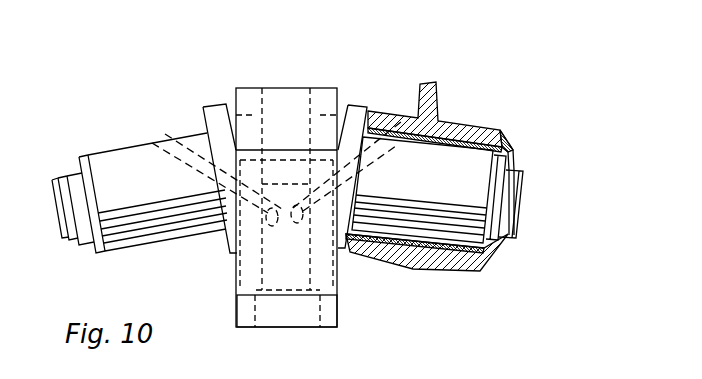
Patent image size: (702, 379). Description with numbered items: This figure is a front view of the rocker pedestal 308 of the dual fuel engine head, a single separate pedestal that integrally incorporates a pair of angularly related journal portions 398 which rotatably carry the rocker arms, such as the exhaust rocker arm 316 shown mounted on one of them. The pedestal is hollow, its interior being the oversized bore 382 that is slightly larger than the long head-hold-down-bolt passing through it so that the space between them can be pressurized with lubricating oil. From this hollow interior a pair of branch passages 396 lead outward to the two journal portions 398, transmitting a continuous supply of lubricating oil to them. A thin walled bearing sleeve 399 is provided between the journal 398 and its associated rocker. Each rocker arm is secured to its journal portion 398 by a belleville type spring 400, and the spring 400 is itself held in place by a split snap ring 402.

The rocker pedestal 308 is at (327, 93).
The exhaust rocker arm 316 is at (430, 193).
The bore 382 is at (256, 301).
The branch passages 396 is at (168, 138).
The journal portions 398 is at (100, 159).
The thin walled bearing sleeve 399 is at (413, 252).
The belleville type spring 400 is at (507, 154).
The split snap ring 402 is at (516, 169).